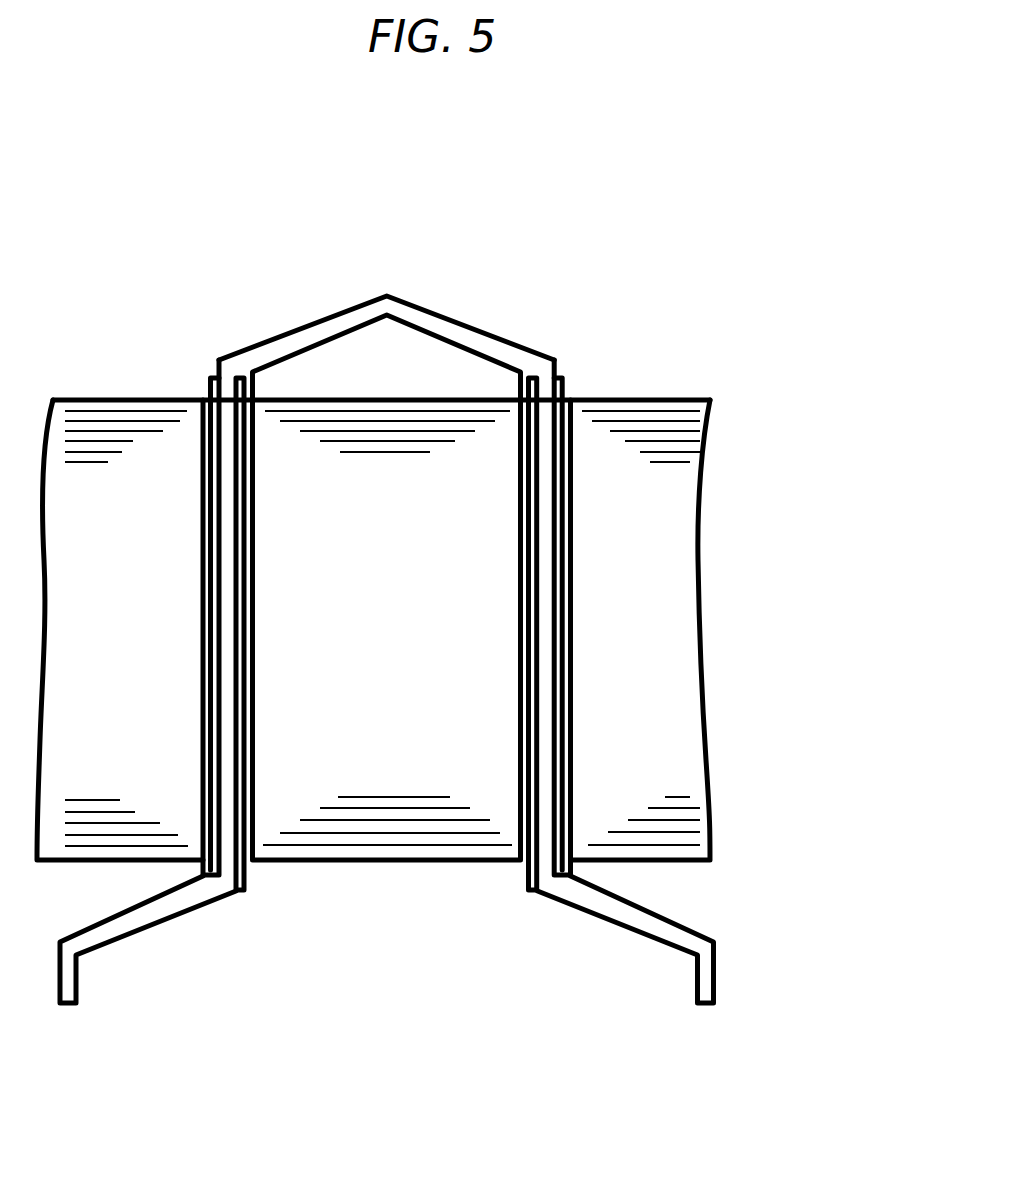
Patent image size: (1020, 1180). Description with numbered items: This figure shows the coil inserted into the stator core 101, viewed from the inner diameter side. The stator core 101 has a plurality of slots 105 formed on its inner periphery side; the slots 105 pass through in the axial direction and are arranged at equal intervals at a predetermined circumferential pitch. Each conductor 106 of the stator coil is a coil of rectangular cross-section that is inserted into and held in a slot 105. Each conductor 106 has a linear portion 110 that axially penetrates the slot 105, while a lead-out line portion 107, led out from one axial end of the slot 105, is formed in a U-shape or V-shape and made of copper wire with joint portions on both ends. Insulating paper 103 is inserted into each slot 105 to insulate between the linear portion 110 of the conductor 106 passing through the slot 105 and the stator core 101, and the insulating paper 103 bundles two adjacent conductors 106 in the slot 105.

The stator core 101 is at (628, 437).
The insulating paper 103 is at (566, 380).
The slot 105 is at (200, 378).
The conductor 106 is at (302, 330).
The lead-out line portion 107 is at (383, 290).
The linear portion 110 is at (550, 556).